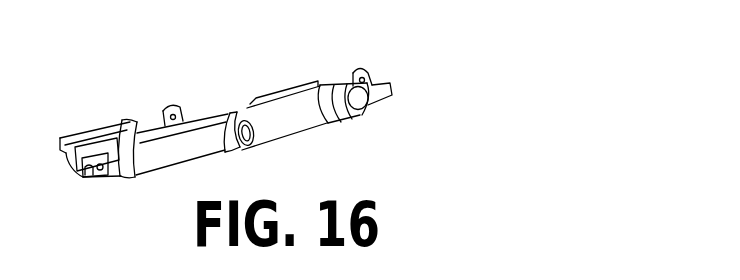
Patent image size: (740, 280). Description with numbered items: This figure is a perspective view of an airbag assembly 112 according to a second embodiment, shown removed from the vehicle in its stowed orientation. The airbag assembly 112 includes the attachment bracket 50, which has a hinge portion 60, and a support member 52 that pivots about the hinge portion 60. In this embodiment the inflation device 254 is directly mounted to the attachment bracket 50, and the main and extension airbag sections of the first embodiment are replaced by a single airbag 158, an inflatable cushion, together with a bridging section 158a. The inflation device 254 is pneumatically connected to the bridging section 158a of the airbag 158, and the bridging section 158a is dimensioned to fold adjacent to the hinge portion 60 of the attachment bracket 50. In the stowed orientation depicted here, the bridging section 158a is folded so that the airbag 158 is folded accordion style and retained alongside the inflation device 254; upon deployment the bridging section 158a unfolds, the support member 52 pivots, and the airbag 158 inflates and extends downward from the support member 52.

The airbag assembly 112 is at (172, 80).
The attachment bracket 50 is at (267, 97).
The support member 52 is at (180, 141).
The hinge portion 60 is at (98, 133).
The airbag 158 is at (158, 164).
The bridging section 158a is at (76, 166).
The inflation device 254 is at (283, 127).